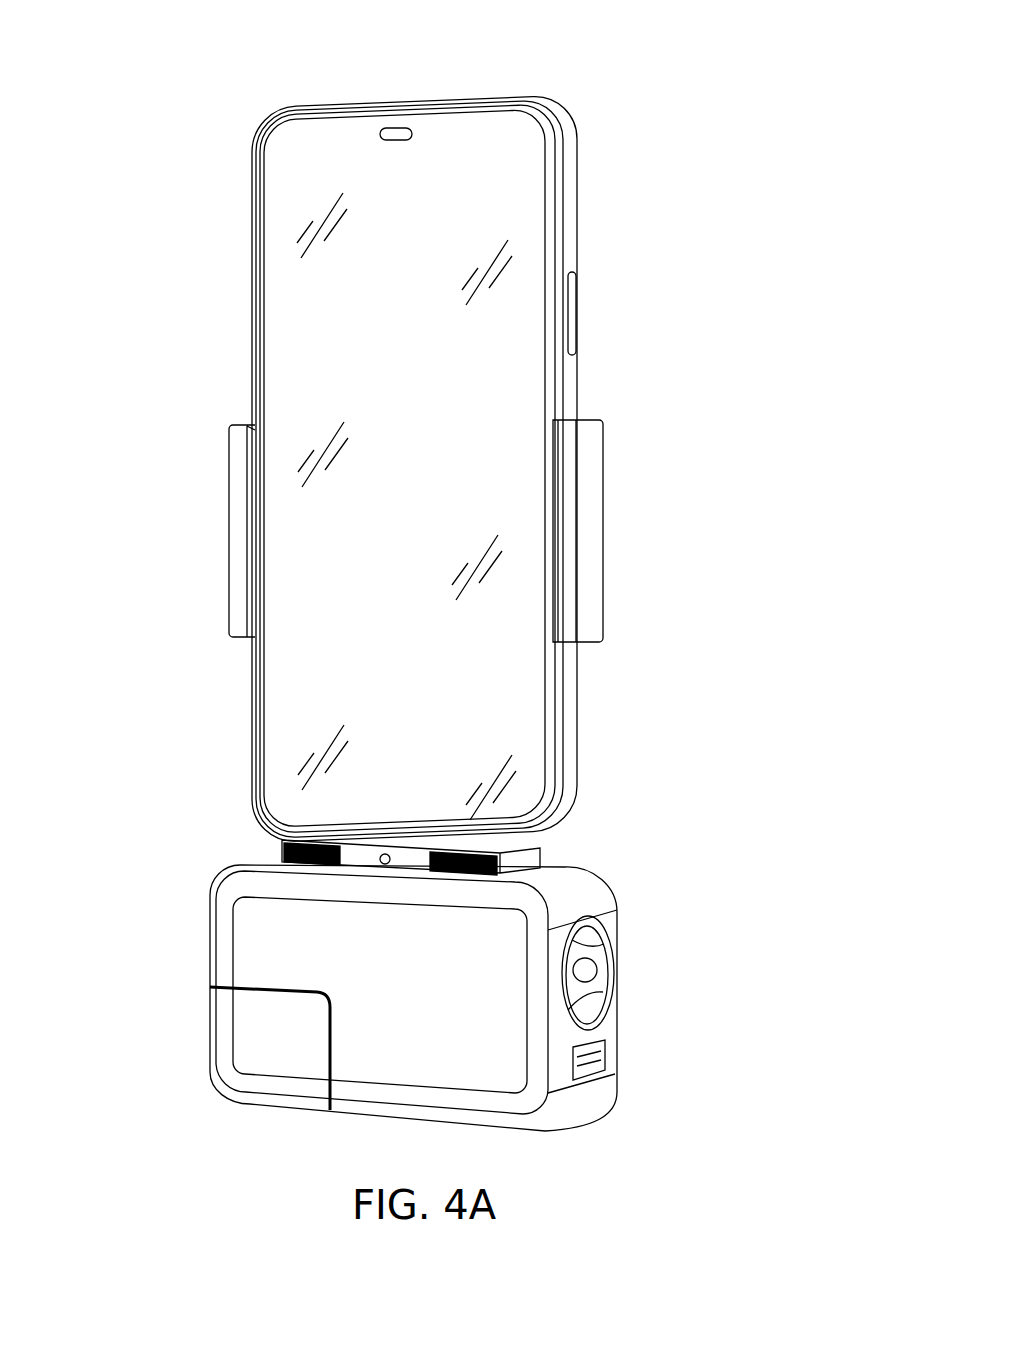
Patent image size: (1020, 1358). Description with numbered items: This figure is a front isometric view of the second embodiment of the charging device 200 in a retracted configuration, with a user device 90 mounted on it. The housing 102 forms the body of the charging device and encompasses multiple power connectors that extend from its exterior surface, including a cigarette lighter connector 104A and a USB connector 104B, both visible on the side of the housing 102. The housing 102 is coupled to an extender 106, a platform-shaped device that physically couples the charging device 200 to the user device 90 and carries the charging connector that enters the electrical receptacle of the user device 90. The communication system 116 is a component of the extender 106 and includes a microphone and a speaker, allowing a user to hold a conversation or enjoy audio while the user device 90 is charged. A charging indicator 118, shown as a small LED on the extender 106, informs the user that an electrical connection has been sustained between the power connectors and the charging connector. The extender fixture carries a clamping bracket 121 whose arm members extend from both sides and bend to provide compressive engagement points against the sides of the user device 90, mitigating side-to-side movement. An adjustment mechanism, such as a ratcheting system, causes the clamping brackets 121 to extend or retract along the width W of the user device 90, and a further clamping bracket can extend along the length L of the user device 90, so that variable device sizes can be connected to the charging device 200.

The user device 90 is at (280, 283).
The charging device 200 is at (195, 484).
The clamping bracket 121 is at (595, 500).
The communication system 116 is at (280, 852).
The extender 106 is at (610, 883).
The housing 102 is at (248, 1057).
The cigarette lighter connector 104A is at (595, 992).
The USB connector 104B is at (605, 1060).
The charging indicator 118 is at (384, 866).
The width W is at (253, 72).
The length L is at (588, 97).